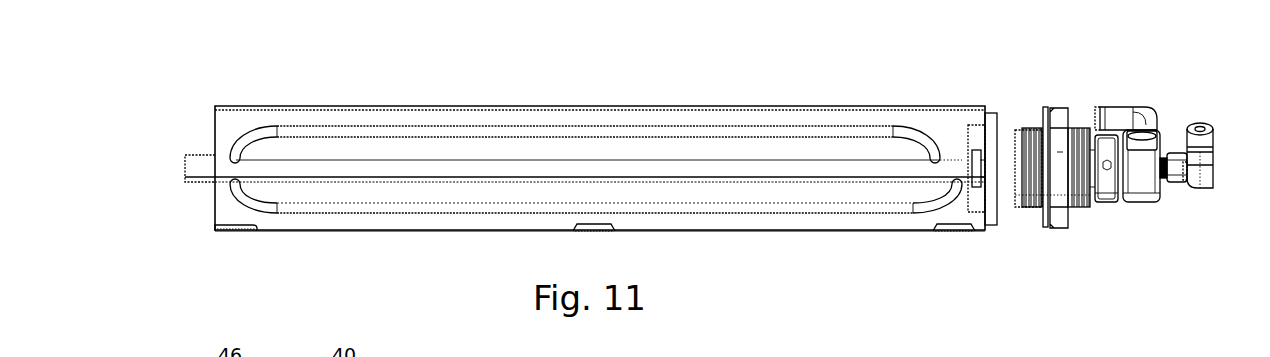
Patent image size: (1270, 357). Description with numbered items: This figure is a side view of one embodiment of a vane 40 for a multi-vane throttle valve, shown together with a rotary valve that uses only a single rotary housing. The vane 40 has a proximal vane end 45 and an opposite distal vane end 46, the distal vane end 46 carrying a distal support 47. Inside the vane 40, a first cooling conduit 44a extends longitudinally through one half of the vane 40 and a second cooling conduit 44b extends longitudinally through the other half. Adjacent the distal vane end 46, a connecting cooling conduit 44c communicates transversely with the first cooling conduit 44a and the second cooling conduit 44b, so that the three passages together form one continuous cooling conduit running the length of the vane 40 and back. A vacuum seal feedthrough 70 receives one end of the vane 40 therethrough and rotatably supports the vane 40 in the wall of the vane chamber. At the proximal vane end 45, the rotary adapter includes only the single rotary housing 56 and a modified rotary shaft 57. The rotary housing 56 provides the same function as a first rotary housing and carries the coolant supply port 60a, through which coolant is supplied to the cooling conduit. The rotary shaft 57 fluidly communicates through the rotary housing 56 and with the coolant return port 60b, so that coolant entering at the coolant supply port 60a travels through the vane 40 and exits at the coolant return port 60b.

The vane 40 is at (273, 105).
The first cooling conduit 44a is at (538, 127).
The second cooling conduit 44b is at (445, 203).
The connecting cooling conduit 44c is at (248, 197).
The proximal vane end 45 is at (968, 105).
The distal vane end 46 is at (217, 106).
The distal support 47 is at (195, 183).
The rotary housing 56 is at (1137, 205).
The rotary shaft 57 is at (1161, 158).
The coolant supply port 60a is at (1115, 105).
The coolant return port 60b is at (1213, 166).
The vacuum seal feedthrough 70 is at (1023, 128).